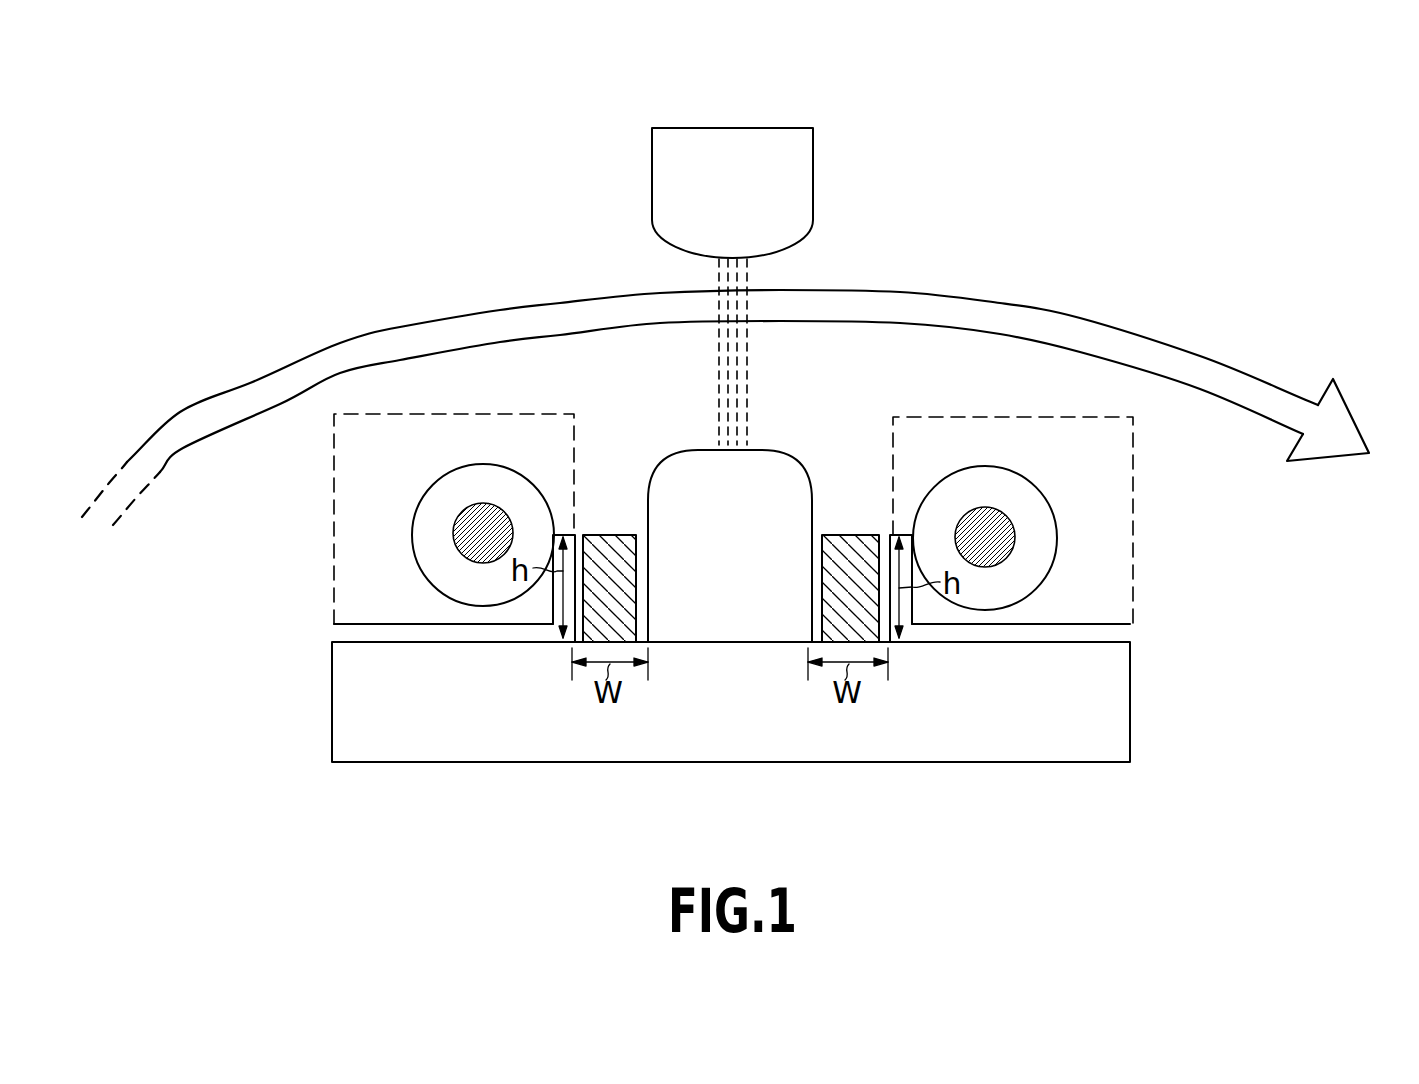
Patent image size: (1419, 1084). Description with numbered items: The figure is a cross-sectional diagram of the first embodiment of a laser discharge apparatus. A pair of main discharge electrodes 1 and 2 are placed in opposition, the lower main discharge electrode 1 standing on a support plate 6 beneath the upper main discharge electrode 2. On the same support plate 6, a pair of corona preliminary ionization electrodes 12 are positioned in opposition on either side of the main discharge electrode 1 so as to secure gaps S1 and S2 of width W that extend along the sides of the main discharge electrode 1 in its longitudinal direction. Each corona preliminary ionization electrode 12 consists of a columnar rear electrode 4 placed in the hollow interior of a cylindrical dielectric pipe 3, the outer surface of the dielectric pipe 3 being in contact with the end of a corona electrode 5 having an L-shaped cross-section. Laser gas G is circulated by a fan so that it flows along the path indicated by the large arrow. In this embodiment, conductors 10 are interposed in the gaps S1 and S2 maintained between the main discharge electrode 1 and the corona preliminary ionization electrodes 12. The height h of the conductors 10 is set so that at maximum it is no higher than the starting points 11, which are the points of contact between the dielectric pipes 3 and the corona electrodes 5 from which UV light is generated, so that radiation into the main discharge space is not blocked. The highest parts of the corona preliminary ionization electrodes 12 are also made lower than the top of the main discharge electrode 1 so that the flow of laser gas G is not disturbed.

The main discharge electrode 1 is at (763, 487).
The main discharge electrode 2 is at (792, 178).
The dielectric pipe 3 is at (475, 472).
The rear electrode 4 is at (448, 535).
The corona electrode 5 is at (370, 635).
The support plate 6 is at (1110, 738).
The conductor 10 is at (609, 548).
The starting point 11 is at (568, 512).
The corona preliminary ionization electrode 12 is at (334, 534).
The laser gas G is at (1330, 425).
The gap S1 is at (648, 597).
The gap S2 is at (812, 592).